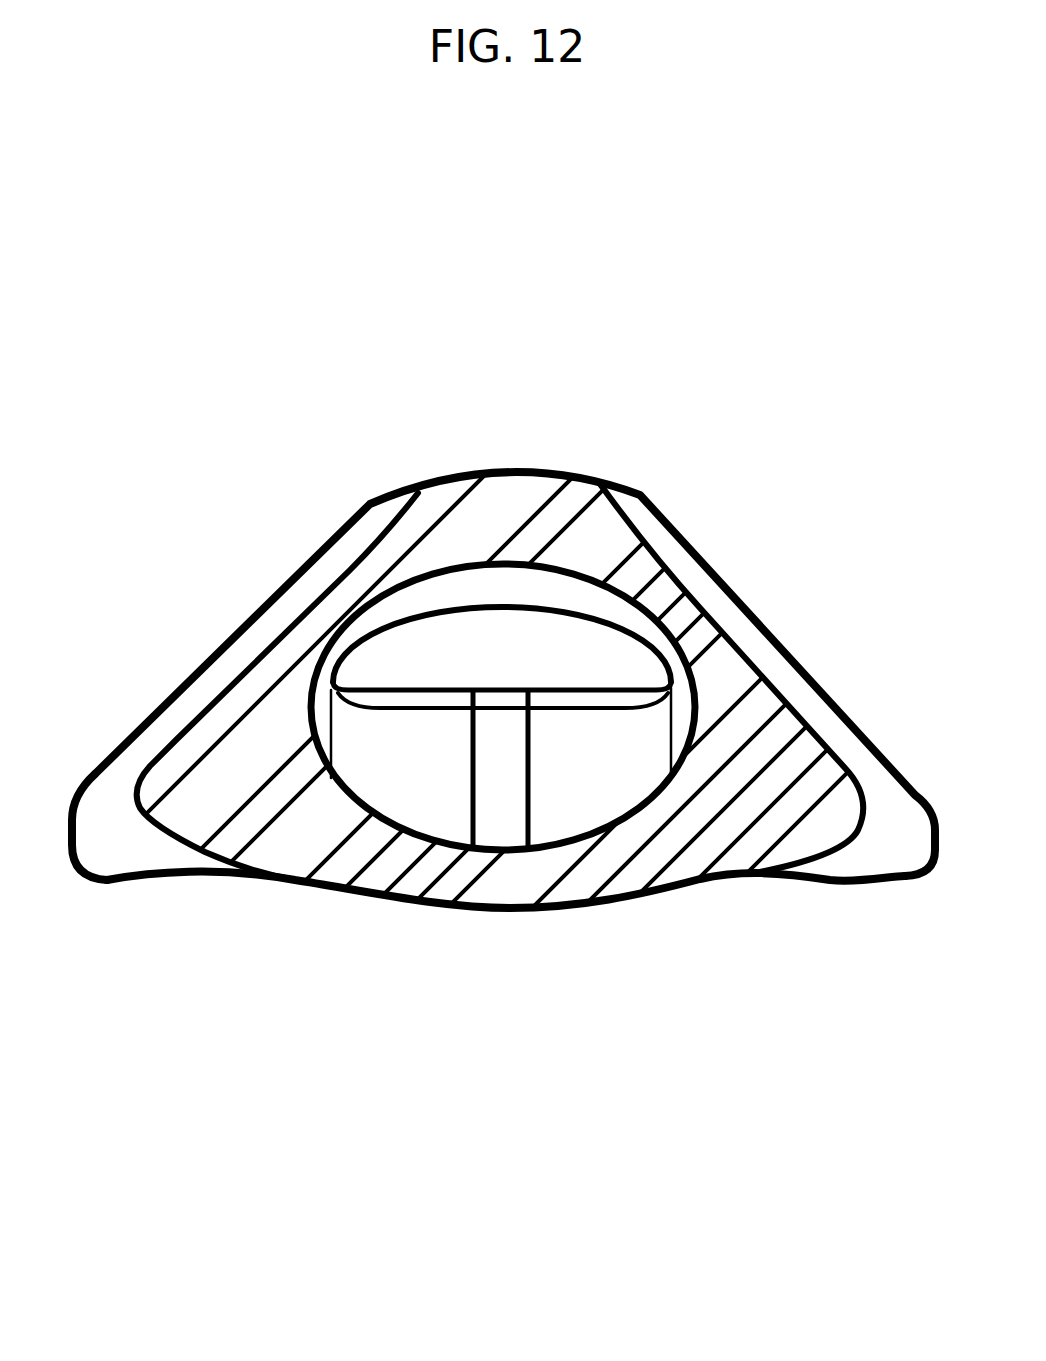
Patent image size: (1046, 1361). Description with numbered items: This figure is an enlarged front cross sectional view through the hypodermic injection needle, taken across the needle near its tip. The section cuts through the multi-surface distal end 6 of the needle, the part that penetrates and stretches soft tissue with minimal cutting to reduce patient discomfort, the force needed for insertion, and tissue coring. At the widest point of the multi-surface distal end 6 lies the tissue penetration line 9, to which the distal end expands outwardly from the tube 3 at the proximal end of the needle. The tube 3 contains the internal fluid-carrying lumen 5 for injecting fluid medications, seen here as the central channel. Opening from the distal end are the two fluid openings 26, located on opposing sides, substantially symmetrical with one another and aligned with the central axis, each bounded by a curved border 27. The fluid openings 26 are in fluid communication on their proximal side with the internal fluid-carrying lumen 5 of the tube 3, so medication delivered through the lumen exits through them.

The tube 3 is at (360, 883).
The internal fluid-carrying lumen 5 is at (603, 782).
The multi-surface distal end 6 is at (437, 972).
The tissue penetration line 9 is at (83, 872).
The fluid openings 26 is at (553, 668).
The curved border 27 is at (360, 687).